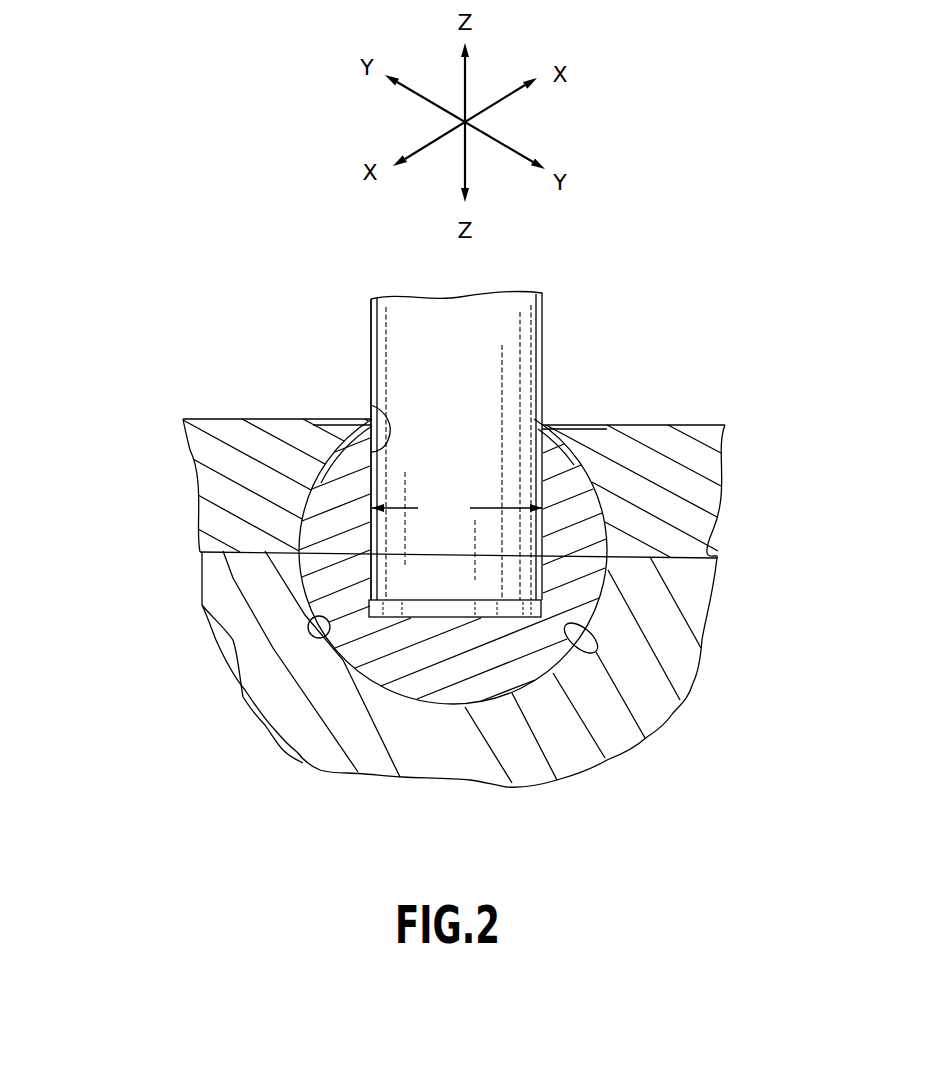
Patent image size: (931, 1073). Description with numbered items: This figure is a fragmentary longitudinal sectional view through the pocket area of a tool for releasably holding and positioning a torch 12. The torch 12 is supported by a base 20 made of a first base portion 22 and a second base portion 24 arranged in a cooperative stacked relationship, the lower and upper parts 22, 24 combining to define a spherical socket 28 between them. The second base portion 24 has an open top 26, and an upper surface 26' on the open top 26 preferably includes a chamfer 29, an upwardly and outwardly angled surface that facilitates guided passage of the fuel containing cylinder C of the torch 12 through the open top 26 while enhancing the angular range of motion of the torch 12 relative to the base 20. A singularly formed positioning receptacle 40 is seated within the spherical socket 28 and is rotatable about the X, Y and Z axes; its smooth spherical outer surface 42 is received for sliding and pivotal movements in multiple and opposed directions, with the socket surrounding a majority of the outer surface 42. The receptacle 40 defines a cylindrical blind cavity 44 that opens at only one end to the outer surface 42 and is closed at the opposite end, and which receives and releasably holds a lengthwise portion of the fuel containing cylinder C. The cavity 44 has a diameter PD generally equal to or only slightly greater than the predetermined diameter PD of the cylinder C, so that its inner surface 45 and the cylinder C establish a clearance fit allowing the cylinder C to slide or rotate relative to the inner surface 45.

The torch 12 is at (560, 337).
The base 20 is at (164, 767).
The first base portion 22 is at (683, 676).
The second base portion 24 is at (710, 505).
The open top 26 is at (633, 402).
The upper surface 26' is at (277, 384).
The spherical socket 28 is at (308, 620).
The chamfer 29 is at (590, 427).
The positioning receptacle 40 is at (453, 722).
The spherical outer surface 42 is at (575, 763).
The cylindrical blind cavity 44 is at (374, 407).
The inner surface 45 is at (388, 612).
The fuel containing cylinder C is at (392, 348).
The predetermined diameter PD is at (457, 526).